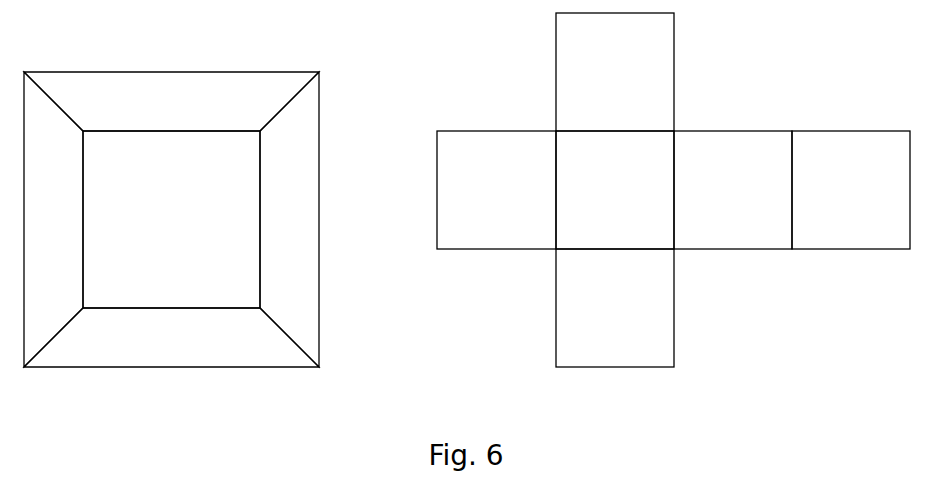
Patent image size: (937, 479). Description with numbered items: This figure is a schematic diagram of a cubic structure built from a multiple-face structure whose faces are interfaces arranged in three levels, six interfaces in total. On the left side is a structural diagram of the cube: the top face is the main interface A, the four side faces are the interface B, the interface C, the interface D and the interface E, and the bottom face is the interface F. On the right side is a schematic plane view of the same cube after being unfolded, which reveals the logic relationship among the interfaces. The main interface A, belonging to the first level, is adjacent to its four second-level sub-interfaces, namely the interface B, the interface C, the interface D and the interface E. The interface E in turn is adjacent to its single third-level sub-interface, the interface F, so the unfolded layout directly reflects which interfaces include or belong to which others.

The main interface A is at (378, 219).
The interface B is at (290, 219).
The interface C is at (349, 72).
The interface D is at (349, 308).
The interface E is at (526, 219).
The interface F is at (512, 190).